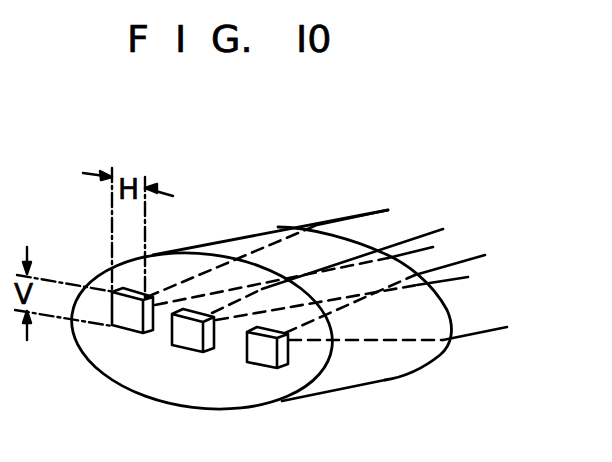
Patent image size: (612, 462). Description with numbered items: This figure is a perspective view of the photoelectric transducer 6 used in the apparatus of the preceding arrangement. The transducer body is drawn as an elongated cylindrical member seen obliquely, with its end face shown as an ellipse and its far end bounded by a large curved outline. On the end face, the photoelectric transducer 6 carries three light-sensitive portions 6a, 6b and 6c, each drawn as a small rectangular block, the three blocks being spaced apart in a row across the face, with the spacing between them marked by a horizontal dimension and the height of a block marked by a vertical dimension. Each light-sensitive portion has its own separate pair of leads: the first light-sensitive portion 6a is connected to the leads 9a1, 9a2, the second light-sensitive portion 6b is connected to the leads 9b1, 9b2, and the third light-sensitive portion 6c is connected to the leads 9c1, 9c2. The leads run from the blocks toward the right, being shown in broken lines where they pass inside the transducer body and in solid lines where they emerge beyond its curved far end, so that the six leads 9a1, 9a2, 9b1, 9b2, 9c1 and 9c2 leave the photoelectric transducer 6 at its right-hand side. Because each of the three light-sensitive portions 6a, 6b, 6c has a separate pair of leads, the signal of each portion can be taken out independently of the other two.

The photoelectric transducer 6 is at (388, 378).
The light-sensitive portion 6a is at (126, 328).
The light-sensitive portion 6b is at (192, 350).
The light-sensitive portion 6c is at (266, 366).
The lead 9a1 is at (373, 212).
The lead 9a2 is at (433, 249).
The lead 9b1 is at (435, 228).
The lead 9b2 is at (455, 279).
The lead 9c1 is at (486, 256).
The lead 9c2 is at (487, 333).